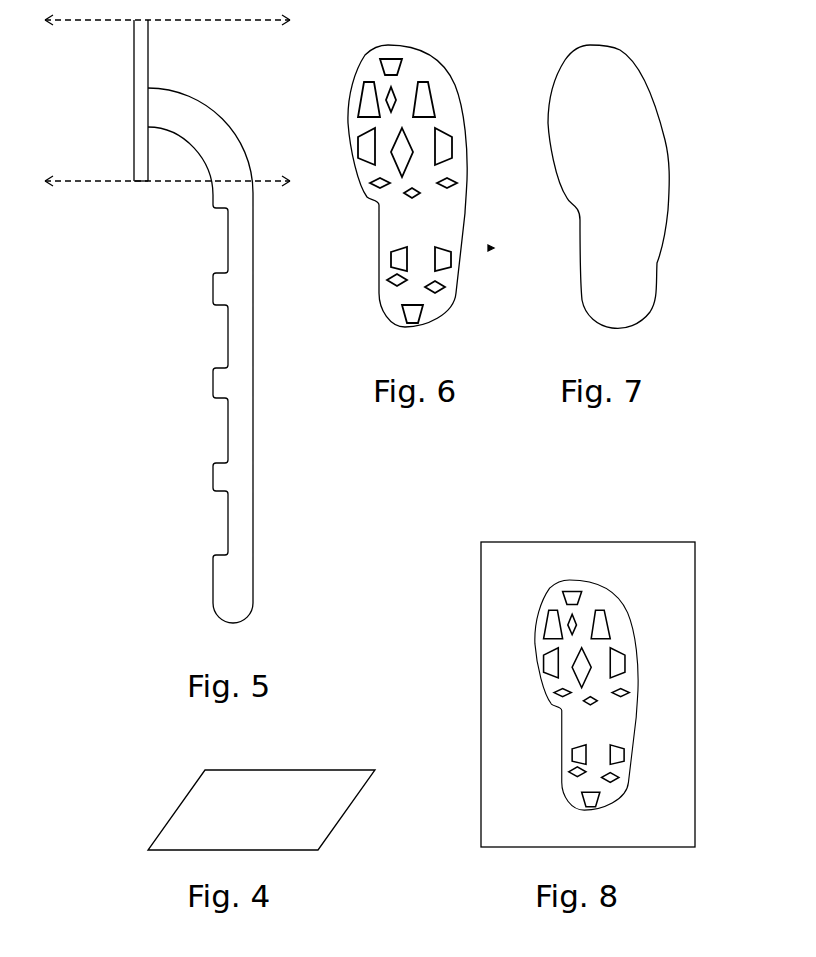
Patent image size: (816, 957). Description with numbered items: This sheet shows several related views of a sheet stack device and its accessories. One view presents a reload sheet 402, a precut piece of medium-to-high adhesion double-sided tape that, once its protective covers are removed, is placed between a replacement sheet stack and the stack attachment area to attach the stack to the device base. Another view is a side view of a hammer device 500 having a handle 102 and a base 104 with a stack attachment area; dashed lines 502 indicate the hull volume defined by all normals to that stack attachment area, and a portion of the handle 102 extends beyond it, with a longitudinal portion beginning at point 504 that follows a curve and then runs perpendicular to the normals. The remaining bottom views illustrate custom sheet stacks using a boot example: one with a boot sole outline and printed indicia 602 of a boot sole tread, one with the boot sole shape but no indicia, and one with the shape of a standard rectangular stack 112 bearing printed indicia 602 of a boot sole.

In FIG. 5, the handle 102 is at (222, 570).
In FIG. 5, the base 104 is at (142, 127).
In FIG. 6, the sheet stack 112 is at (428, 313).
In FIG. 7, the sheet stack 112 is at (610, 310).
In FIG. 8, the sheet stack 112 is at (585, 553).
In FIG. 4, the reload sheet 402 is at (261, 810).
In FIG. 5, the hammer device 500 is at (103, 432).
In FIG. 5, the dashed lines 502 is at (254, 21).
In FIG. 5, the point 504 is at (150, 102).
In FIG. 6, the printed indicia 602 is at (445, 260).
In FIG. 8, the printed indicia 602 is at (552, 640).